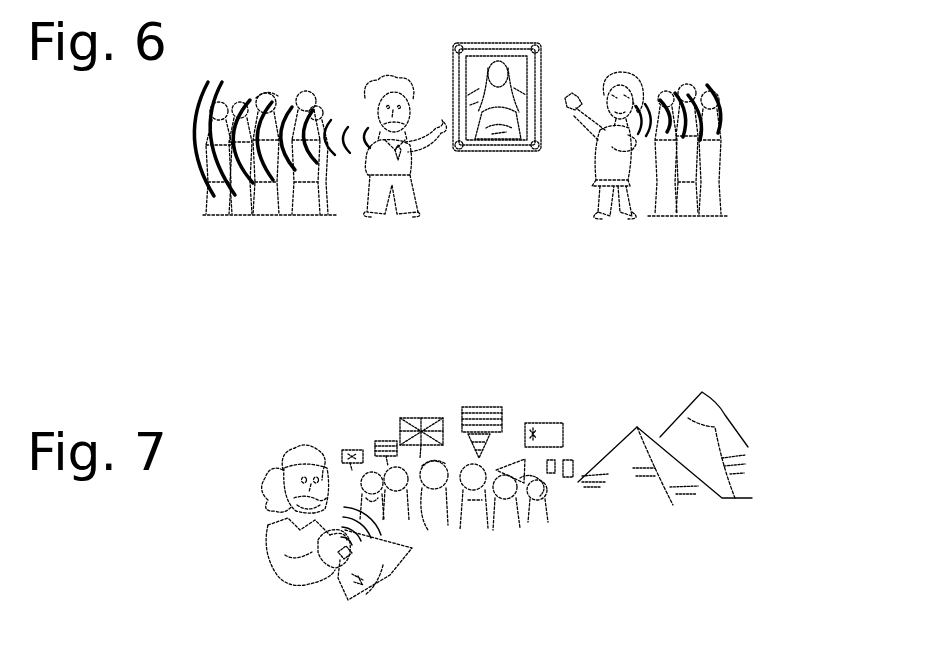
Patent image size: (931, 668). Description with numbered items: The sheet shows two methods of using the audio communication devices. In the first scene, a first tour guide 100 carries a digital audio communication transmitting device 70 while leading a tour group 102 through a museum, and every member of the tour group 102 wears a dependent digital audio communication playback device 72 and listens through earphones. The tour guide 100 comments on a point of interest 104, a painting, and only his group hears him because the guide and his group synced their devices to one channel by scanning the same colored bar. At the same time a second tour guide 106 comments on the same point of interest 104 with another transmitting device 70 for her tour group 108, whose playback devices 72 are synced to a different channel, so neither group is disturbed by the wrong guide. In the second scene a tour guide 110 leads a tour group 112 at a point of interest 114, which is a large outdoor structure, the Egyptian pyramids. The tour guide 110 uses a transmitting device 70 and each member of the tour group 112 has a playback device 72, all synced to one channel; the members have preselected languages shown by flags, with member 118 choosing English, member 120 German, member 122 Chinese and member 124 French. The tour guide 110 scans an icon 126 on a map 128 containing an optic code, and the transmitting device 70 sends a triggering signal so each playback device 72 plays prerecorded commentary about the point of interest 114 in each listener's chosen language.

In FIG. 6, the digital audio communication transmitting device 70 is at (398, 134).
In FIG. 7, the digital audio communication transmitting device 70 is at (336, 568).
In FIG. 6, the dependent digital audio communication playback device 72 is at (317, 163).
In FIG. 7, the dependent digital audio communication playback device 72 is at (518, 515).
In FIG. 6, the first tour guide 100 is at (427, 186).
In FIG. 6, the tour group 102 is at (294, 66).
In FIG. 6, the point of interest 104 is at (490, 43).
In FIG. 6, the second tour guide 106 is at (578, 181).
In FIG. 6, the tour group 108 is at (702, 66).
In FIG. 7, the tour guide 110 is at (278, 540).
In FIG. 7, the tour group 112 is at (558, 544).
In FIG. 7, the point of interest 114 is at (655, 410).
In FIG. 7, the member 118 is at (413, 462).
In FIG. 7, the member 120 is at (467, 457).
In FIG. 7, the member 122 is at (498, 465).
In FIG. 7, the member 124 is at (540, 483).
In FIG. 7, the icon 126 is at (358, 584).
In FIG. 7, the map 128 is at (382, 563).